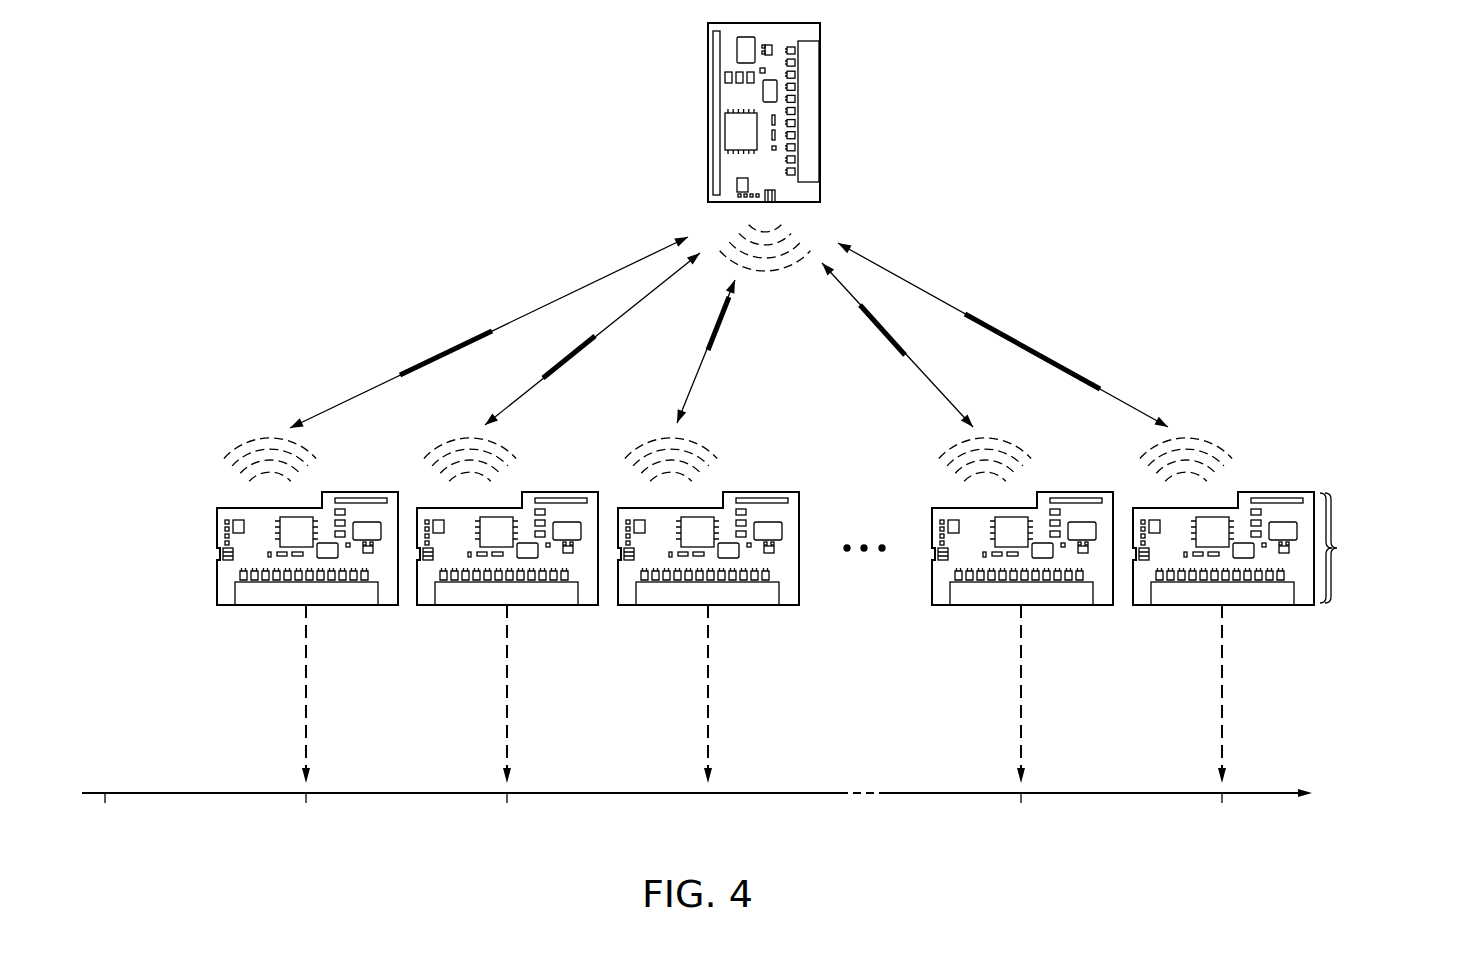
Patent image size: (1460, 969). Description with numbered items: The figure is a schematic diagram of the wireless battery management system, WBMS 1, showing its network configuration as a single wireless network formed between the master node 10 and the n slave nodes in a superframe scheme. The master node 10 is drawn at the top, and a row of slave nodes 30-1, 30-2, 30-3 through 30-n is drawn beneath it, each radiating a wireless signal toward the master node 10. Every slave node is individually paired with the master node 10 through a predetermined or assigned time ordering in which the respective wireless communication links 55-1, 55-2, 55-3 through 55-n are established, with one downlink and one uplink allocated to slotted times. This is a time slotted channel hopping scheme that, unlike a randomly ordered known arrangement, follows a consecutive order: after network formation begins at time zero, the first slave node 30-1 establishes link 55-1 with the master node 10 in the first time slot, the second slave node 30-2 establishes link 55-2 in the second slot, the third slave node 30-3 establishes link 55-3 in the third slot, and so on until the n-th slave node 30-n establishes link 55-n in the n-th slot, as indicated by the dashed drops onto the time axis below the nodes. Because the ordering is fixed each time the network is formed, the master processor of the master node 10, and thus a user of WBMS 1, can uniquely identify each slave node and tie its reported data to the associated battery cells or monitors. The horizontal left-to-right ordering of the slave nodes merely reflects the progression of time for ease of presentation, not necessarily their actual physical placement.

The WBMS 1 is at (328, 105).
The master node 10 is at (708, 112).
The first slave node 30-1 is at (272, 605).
The second slave node 30-2 is at (472, 605).
The third slave node 30-3 is at (673, 605).
The n-th slave node 30-n is at (1266, 605).
The wireless communication link 55-1 is at (489, 332).
The wireless communication link 55-2 is at (592, 339).
The wireless communication link 55-3 is at (746, 351).
The wireless communication link 55-n is at (1003, 335).